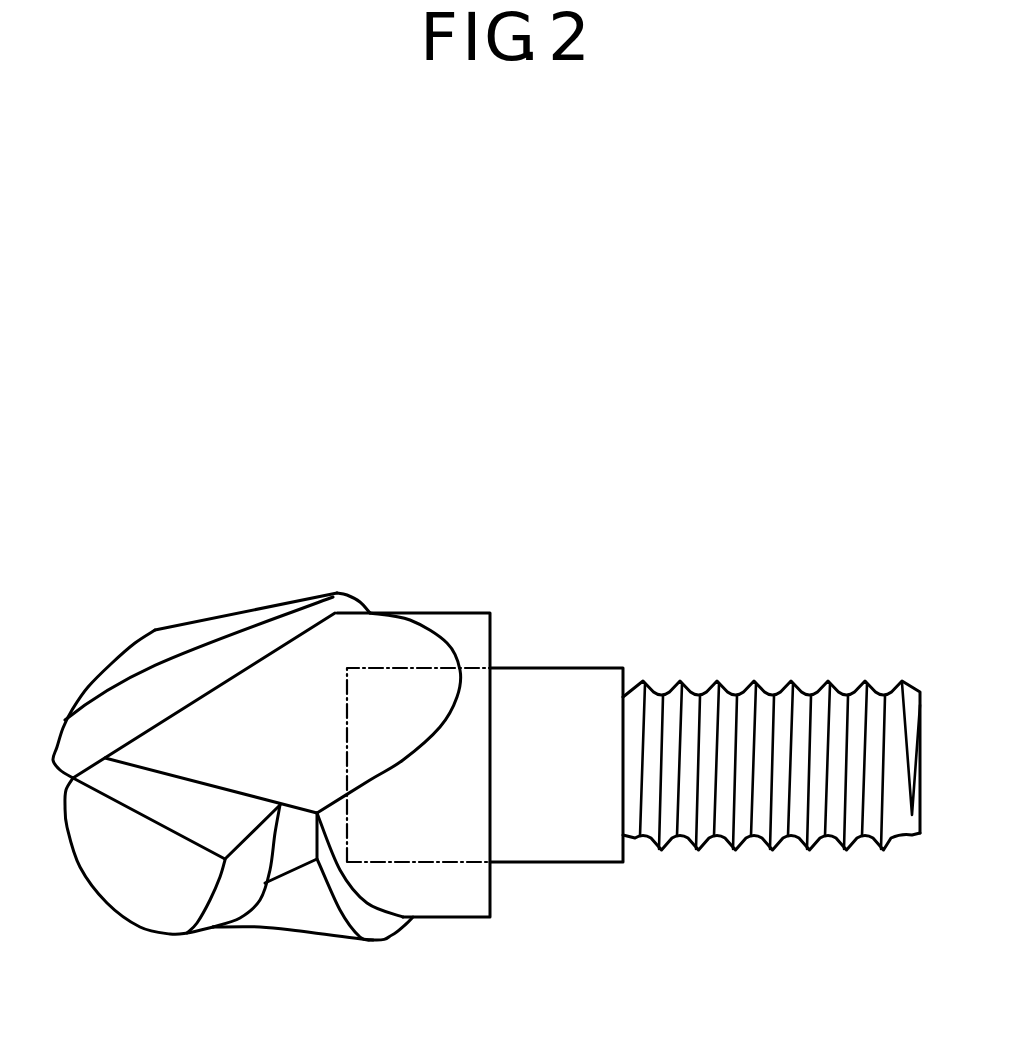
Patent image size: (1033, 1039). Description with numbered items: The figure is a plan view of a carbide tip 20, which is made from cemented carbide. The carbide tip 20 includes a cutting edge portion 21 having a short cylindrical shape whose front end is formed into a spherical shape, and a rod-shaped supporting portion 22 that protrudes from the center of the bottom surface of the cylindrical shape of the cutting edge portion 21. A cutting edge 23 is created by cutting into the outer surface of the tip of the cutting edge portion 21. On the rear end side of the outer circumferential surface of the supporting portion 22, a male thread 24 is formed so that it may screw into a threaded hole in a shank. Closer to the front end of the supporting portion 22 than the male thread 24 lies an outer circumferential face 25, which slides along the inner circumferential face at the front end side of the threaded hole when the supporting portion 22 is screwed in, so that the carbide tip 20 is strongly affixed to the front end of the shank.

The carbide tip 20 is at (411, 468).
The cutting edge portion 21 is at (206, 588).
The supporting portion 22 is at (677, 627).
The cutting edge 23 is at (162, 662).
The male thread 24 is at (828, 680).
The outer circumferential face 25 is at (552, 683).